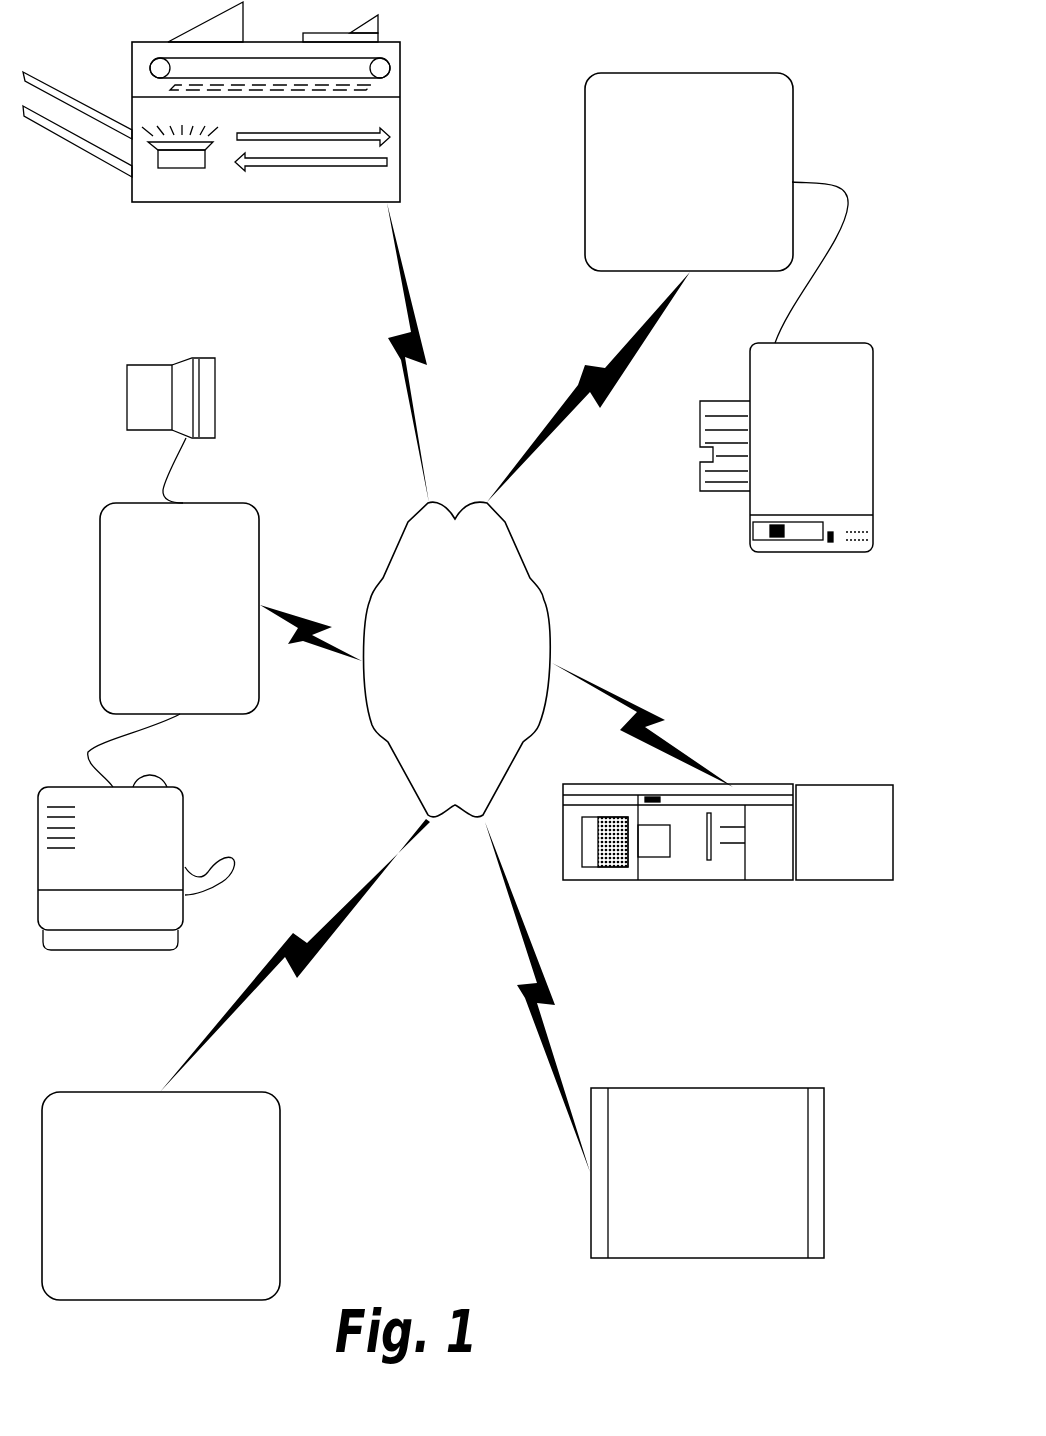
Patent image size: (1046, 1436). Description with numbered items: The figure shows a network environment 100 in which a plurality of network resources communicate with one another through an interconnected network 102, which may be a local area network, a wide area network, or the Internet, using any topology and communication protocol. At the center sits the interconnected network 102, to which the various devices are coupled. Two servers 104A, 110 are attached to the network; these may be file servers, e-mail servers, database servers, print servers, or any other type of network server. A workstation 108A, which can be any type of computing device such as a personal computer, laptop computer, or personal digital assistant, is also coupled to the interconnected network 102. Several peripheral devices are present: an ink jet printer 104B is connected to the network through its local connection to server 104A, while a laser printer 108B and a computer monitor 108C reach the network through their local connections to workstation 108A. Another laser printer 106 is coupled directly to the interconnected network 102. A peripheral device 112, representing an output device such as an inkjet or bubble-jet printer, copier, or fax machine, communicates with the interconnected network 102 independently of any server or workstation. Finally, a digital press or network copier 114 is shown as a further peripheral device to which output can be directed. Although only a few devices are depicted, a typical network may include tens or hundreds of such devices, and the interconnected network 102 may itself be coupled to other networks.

The network environment 100 is at (450, 63).
The interconnected network 102 is at (398, 552).
The server 104A is at (688, 73).
The ink jet printer 104B is at (803, 343).
The laser printer 106 is at (226, 204).
The workstation 108A is at (100, 605).
The laser printer 108B is at (183, 812).
The computer monitor 108C is at (133, 363).
The server 110 is at (282, 1200).
The peripheral device 112 is at (824, 1172).
The digital press or network copier 114 is at (710, 882).